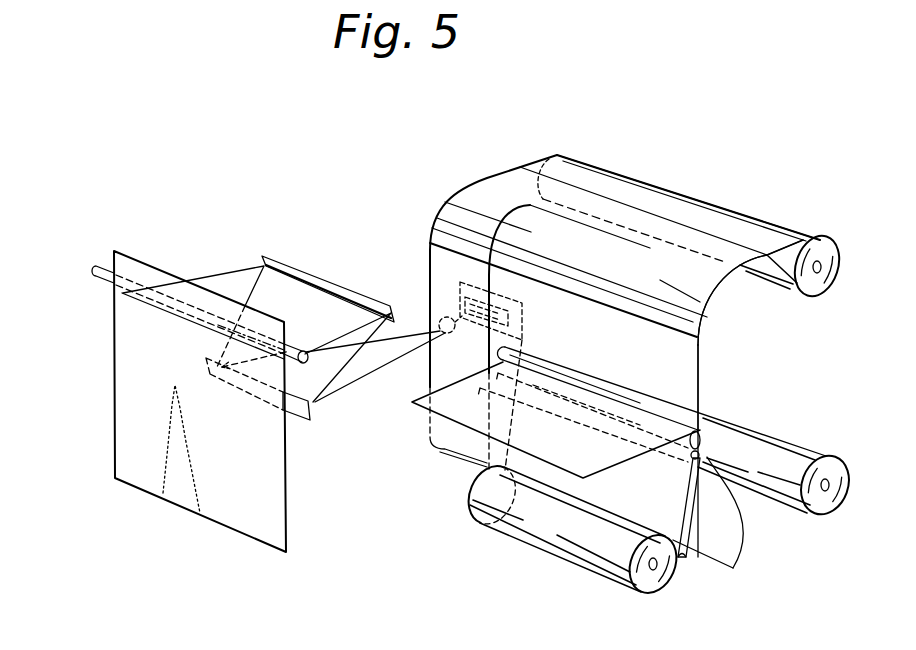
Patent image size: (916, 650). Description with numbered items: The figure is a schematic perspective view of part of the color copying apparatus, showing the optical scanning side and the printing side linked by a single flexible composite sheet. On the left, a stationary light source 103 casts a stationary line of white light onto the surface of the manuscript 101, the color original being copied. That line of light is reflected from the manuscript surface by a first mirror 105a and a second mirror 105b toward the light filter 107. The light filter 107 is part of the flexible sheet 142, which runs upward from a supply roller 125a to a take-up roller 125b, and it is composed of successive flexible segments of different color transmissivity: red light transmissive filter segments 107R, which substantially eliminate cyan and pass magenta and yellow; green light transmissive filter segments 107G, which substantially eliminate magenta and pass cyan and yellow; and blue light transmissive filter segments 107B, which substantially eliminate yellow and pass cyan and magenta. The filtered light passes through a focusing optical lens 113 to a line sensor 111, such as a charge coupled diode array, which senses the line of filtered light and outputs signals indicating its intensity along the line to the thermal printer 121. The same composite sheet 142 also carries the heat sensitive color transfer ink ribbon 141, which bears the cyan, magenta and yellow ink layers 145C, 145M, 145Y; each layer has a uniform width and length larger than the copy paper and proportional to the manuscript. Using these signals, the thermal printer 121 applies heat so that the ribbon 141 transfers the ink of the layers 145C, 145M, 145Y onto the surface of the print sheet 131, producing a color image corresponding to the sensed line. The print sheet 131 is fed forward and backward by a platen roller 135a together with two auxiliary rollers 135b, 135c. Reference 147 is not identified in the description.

The manuscript 101 is at (114, 422).
The stationary light source 103 is at (102, 266).
The mirror 105a is at (266, 256).
The mirror 105b is at (310, 410).
The light filter 107 is at (596, 160).
The red light transmissive filter segment 107R is at (542, 158).
The green light transmissive filter segment 107G is at (480, 184).
The blue light transmissive filter segment 107B is at (411, 402).
The line sensor 111 is at (458, 290).
The focusing optical lens 113 is at (440, 318).
The thermal printer 121 is at (665, 400).
The supply roller 125a is at (843, 484).
The take-up roller 125b is at (838, 262).
The print sheet 131 is at (690, 560).
The platen roller 135a is at (705, 438).
The auxiliary roller 135b is at (747, 496).
The auxiliary roller 135c is at (718, 412).
The ink ribbon 141 is at (719, 201).
The flexible sheet 142 is at (441, 213).
The cyan ink layer 145C is at (782, 232).
The magenta ink layer 145M is at (700, 300).
The yellow ink layer 145Y is at (683, 358).
The platen drum 147 is at (415, 420).